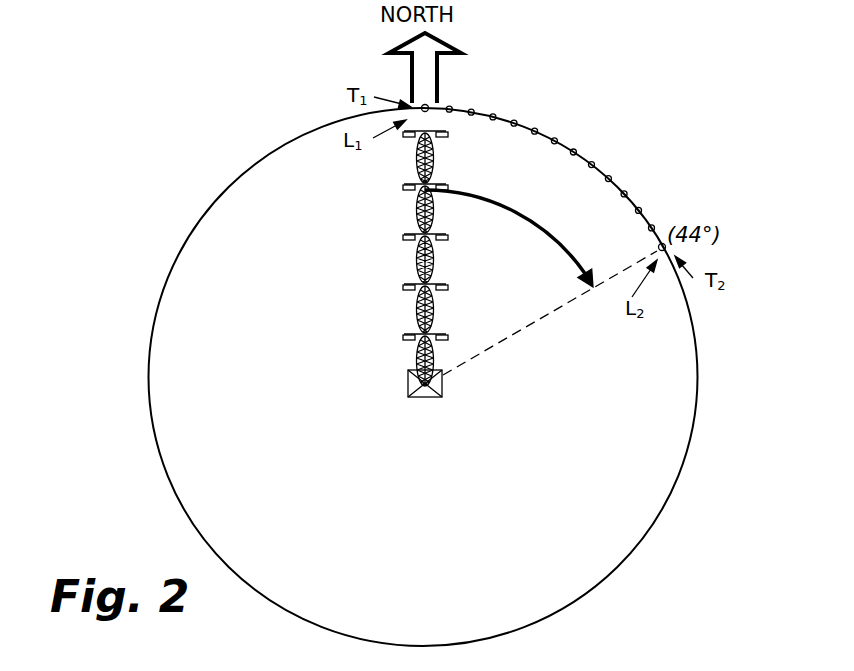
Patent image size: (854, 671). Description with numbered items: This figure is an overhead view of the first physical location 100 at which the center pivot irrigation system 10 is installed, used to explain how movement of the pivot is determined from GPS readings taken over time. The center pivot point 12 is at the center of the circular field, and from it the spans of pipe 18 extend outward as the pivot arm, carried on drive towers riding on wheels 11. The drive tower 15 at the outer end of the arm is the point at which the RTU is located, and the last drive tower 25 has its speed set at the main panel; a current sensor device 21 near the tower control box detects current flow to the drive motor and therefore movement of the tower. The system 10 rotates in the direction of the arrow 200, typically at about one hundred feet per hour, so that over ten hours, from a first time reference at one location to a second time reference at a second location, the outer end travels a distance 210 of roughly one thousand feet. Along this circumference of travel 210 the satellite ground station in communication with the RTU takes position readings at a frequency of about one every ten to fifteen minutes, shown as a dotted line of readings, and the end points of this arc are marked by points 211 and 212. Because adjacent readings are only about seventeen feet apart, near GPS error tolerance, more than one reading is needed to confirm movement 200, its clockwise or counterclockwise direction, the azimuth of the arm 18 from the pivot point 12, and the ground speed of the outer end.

The first physical location 100 is at (196, 173).
The center pivot irrigation system 10 is at (405, 311).
The wheels 11 is at (425, 397).
The center pivot point 12 is at (389, 391).
The drive tower 15 is at (385, 189).
The spans of pipe 18 is at (452, 230).
The current sensor device 21 is at (436, 165).
The last drive tower 25 is at (438, 76).
The direction of movement arrow 200 is at (517, 214).
The distance / circumference of travel 210 is at (563, 143).
The first end point 211 is at (441, 101).
The second end point 212 is at (662, 243).